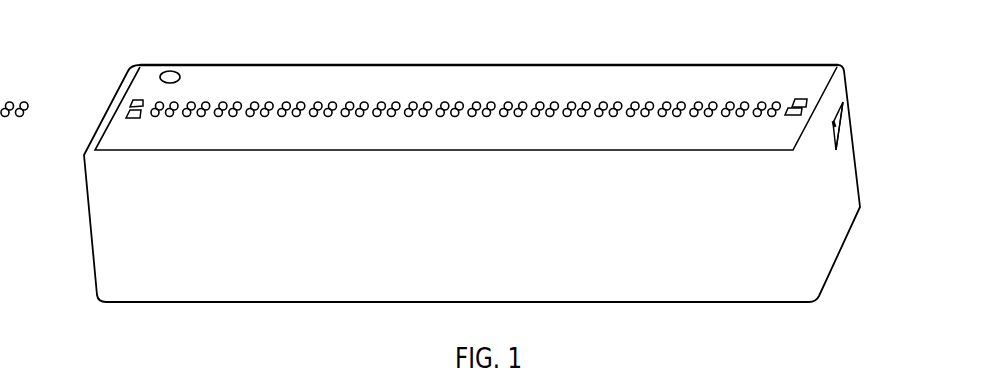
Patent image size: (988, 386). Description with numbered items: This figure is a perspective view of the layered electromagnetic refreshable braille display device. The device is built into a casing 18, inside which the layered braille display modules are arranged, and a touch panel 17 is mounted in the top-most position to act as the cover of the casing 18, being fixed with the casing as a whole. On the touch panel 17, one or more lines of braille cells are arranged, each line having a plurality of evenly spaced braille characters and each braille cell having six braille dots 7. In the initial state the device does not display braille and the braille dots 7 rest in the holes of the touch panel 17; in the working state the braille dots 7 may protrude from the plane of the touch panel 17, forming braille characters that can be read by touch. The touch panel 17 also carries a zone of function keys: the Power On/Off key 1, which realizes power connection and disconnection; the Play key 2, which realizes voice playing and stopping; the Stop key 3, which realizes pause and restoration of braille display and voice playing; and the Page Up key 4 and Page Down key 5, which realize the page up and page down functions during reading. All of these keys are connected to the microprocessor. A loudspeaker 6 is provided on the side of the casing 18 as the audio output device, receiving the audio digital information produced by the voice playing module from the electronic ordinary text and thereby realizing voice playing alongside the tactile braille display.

The Power On/Off key 1 is at (168, 76).
The Play key 2 is at (132, 102).
The Stop key 3 is at (128, 113).
The Page Up key 4 is at (796, 103).
The Page Down key 5 is at (797, 112).
The loudspeaker 6 is at (833, 128).
The braille dots 7 is at (167, 117).
The touch panel 17 is at (372, 135).
The casing 18 is at (820, 215).